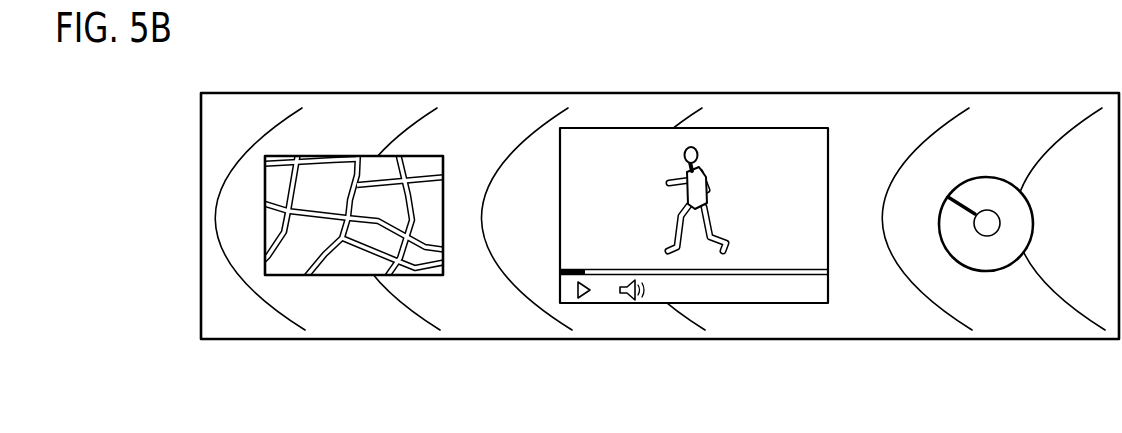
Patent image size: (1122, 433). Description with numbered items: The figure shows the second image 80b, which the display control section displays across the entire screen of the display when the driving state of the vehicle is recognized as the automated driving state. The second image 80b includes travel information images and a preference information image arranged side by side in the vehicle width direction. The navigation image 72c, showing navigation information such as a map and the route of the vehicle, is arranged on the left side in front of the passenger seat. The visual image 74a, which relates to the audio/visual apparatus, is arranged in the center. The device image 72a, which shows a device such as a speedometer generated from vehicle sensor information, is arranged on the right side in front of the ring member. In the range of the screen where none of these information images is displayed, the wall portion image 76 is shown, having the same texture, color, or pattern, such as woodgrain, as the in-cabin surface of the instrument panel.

The second image 80b is at (102, 150).
The navigation image 72c is at (330, 155).
The device image 72a is at (992, 178).
The visual image 74a is at (733, 128).
The wall portion image 76 is at (500, 295).